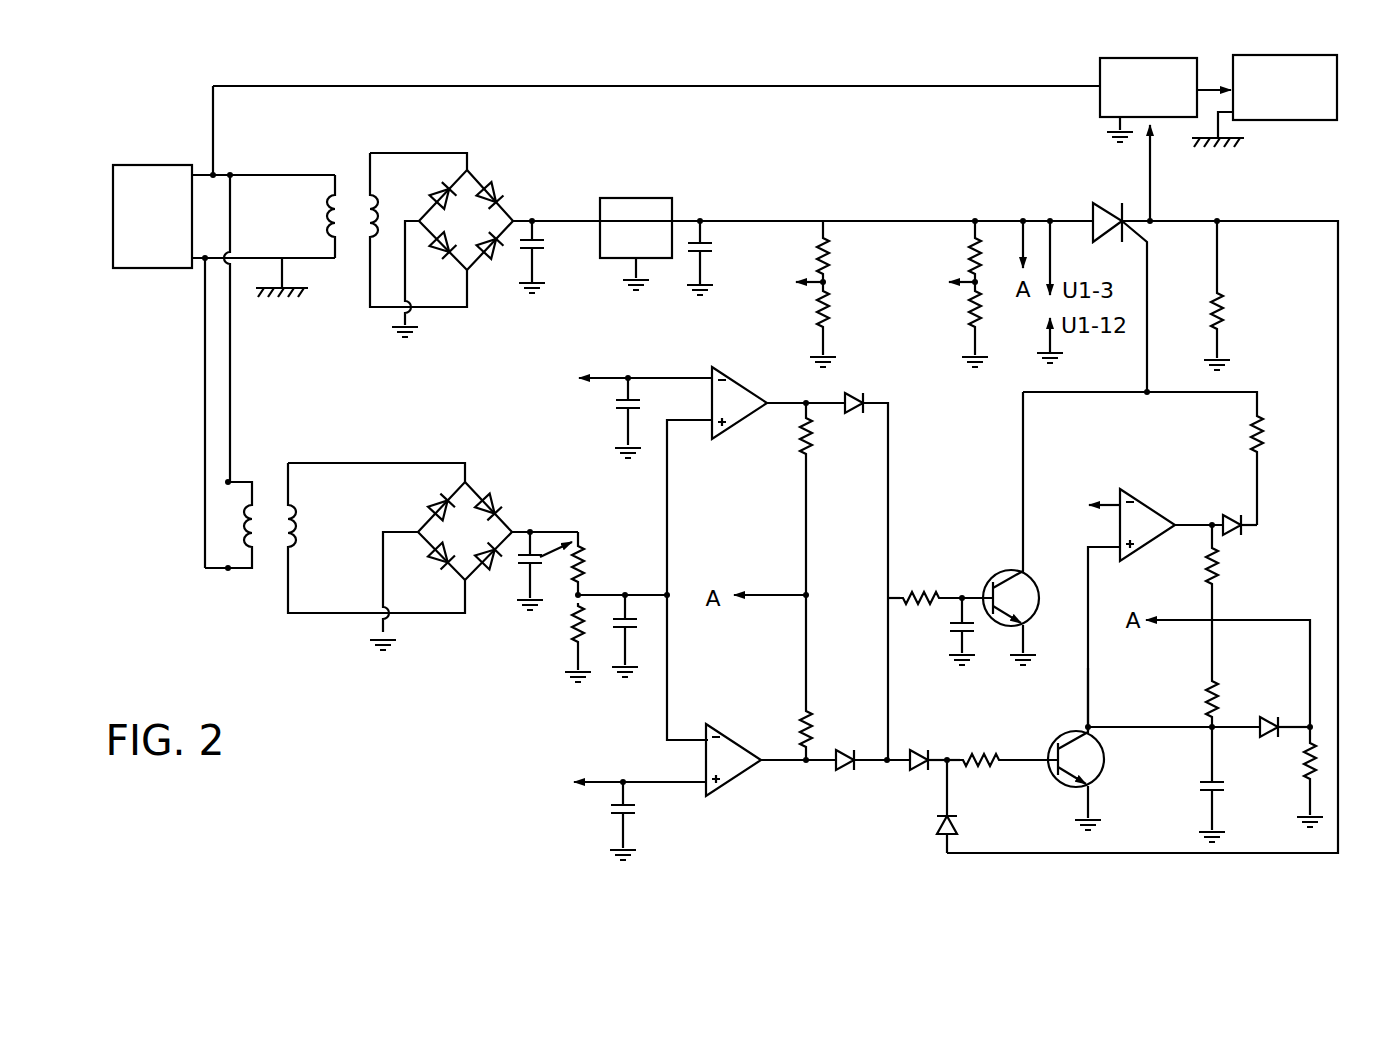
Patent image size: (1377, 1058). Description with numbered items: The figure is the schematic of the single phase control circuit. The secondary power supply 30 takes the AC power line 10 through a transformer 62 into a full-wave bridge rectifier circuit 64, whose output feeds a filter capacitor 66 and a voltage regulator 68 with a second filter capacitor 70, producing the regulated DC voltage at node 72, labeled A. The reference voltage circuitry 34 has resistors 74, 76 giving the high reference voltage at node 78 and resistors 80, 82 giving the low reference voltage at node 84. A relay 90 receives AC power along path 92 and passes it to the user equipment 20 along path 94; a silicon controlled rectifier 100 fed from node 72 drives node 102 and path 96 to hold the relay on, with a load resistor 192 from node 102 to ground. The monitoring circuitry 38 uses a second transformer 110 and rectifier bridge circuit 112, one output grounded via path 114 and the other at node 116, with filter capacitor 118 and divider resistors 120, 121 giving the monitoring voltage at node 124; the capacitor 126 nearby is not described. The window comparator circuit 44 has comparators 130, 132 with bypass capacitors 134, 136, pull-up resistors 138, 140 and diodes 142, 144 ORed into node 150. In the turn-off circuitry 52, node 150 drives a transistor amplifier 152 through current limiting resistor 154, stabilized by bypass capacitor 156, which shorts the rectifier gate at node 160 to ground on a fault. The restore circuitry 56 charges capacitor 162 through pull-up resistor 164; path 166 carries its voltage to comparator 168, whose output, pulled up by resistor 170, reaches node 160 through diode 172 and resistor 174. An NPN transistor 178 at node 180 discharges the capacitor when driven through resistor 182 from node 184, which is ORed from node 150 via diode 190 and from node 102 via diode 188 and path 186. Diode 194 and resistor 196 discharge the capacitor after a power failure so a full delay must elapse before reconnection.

The AC power line 10 is at (137, 165).
The AC powered user equipment 20 is at (1337, 72).
The secondary power supply 30 is at (636, 207).
The reference voltage circuitry 34 is at (878, 235).
The AC power line voltage monitoring circuitry 38 is at (553, 593).
The window comparator circuit 44 is at (607, 666).
The turn-off circuitry 52 is at (944, 543).
The restore circuitry 56 is at (1093, 836).
The transformer 62 is at (352, 165).
The full-wave bridge rectifier circuit 64 is at (483, 162).
The filter capacitor 66 is at (542, 255).
The voltage regulator 68 is at (622, 198).
The second filter capacitor 70 is at (700, 243).
The node 72 is at (823, 221).
The resistor 74 is at (810, 262).
The resistor 76 is at (815, 305).
The node 78 is at (813, 280).
The first resistor 80 is at (964, 233).
The second resistor 82 is at (978, 305).
The node 84 is at (972, 280).
The relay 90 is at (1100, 78).
The path 92 is at (766, 86).
The path 94 is at (1205, 86).
The path 96 is at (1146, 158).
The silicon controlled rectifier 100 is at (1094, 214).
The node 102 is at (1153, 220).
The second transformer 110 is at (266, 578).
The second full-wave rectifier bridge circuit 112 is at (487, 468).
The path 114 is at (383, 572).
The node 116 is at (550, 532).
The filter capacitor 118 is at (576, 548).
The resistor 120 is at (586, 558).
The resistor 121 is at (566, 620).
The node 124 is at (645, 590).
The capacitor C5 126 is at (640, 616).
The first voltage comparator 130 is at (747, 382).
The second voltage comparator 132 is at (729, 786).
The bypass capacitor 134 is at (636, 402).
The bypass capacitor 136 is at (612, 818).
The pull-up resistor 138 is at (815, 447).
The pull-up resistor 140 is at (820, 722).
The diode 142 is at (865, 400).
The diode 144 is at (840, 772).
The node 150 is at (886, 600).
The transistor amplifier 152 is at (1038, 584).
The current limiting resistor 154 is at (938, 596).
The bypass capacitor 156 is at (955, 636).
The node 160 is at (1140, 396).
The capacitor 162 is at (1205, 790).
The pull-up resistor 164 is at (1205, 688).
The path 166 is at (1088, 670).
The voltage comparator 168 is at (1152, 511).
The pull-up resistor 170 is at (1203, 549).
The diode 172 is at (1245, 531).
The current limit resistor 174 is at (1252, 440).
The NPN transistor 178 is at (1104, 768).
The node 180 is at (1115, 725).
The current limit resistor 182 is at (982, 768).
The node 184 is at (950, 757).
The path 186 is at (1082, 852).
The diode 188 is at (945, 832).
The diode 190 is at (912, 772).
The load resistor 192 is at (1218, 292).
The diode 194 is at (1258, 720).
The resistor 196 is at (1302, 770).